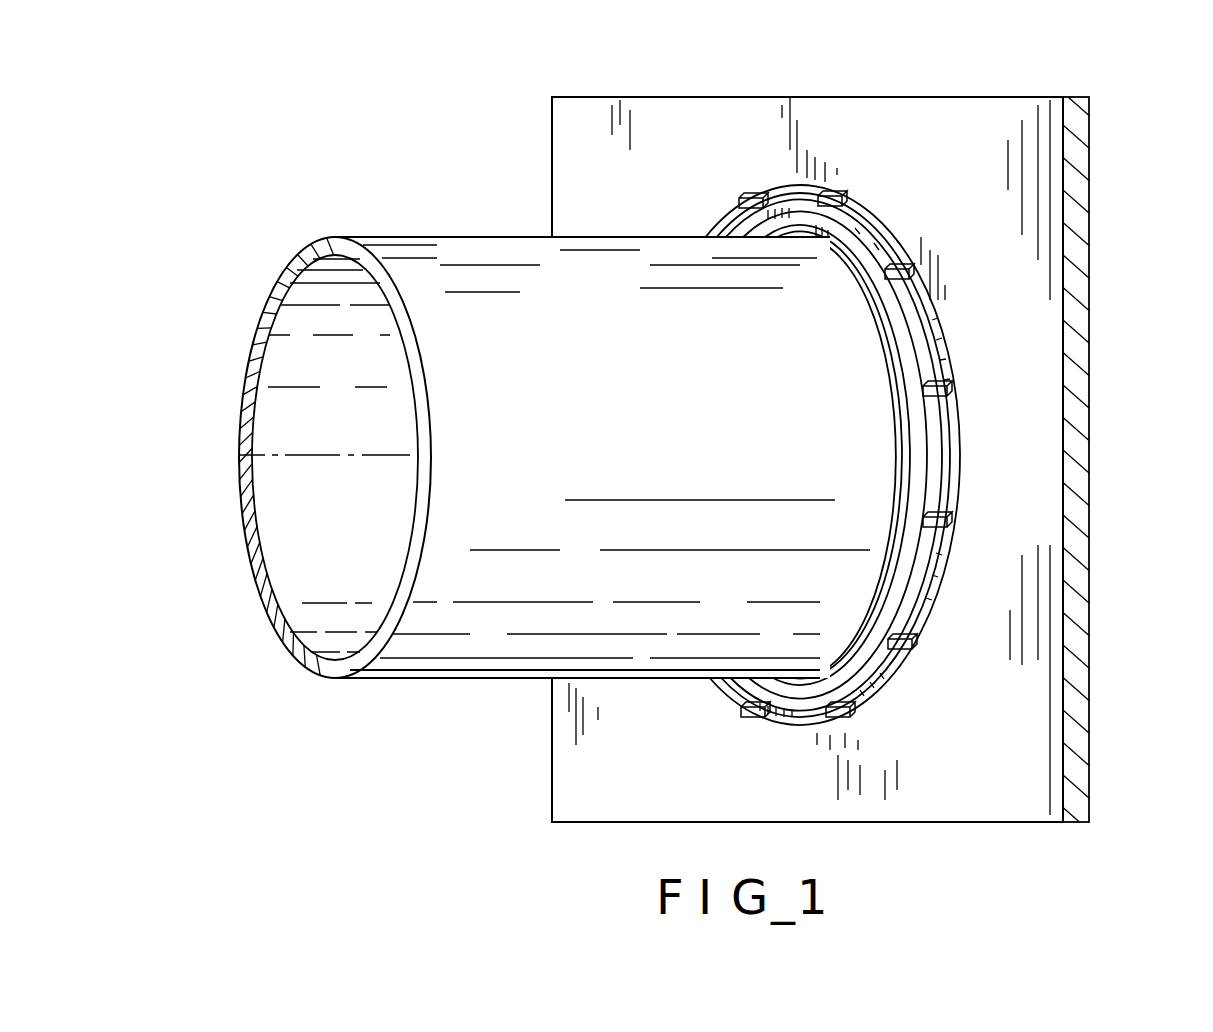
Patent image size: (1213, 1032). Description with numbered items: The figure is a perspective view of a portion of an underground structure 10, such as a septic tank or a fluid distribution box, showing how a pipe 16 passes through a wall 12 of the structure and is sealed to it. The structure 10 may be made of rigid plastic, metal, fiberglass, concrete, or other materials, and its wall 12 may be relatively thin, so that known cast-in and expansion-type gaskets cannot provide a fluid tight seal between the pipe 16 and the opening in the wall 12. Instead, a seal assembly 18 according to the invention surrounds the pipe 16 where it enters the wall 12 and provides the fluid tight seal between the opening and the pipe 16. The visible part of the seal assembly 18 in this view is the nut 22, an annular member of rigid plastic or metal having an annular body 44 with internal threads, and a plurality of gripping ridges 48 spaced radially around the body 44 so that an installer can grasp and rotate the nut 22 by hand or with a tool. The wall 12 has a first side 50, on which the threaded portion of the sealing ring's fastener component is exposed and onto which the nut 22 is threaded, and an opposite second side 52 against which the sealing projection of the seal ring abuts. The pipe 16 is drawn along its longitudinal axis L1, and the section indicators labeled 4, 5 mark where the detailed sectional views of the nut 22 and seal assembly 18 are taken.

The underground structure 10 is at (1152, 130).
The wall 12 is at (867, 439).
The pipe 16 is at (576, 393).
The seal assembly 18 is at (953, 351).
The nut 22 is at (935, 568).
The annular body 44 is at (926, 478).
The gripping ridges 48 is at (935, 395).
The first side of wall 50 is at (1008, 266).
The second side of wall 52 is at (1093, 266).
The section line of FIG. 4 is at (767, 147).
The section line of FIG. 5 is at (779, 302).
The longitudinal axis L1 is at (1140, 455).